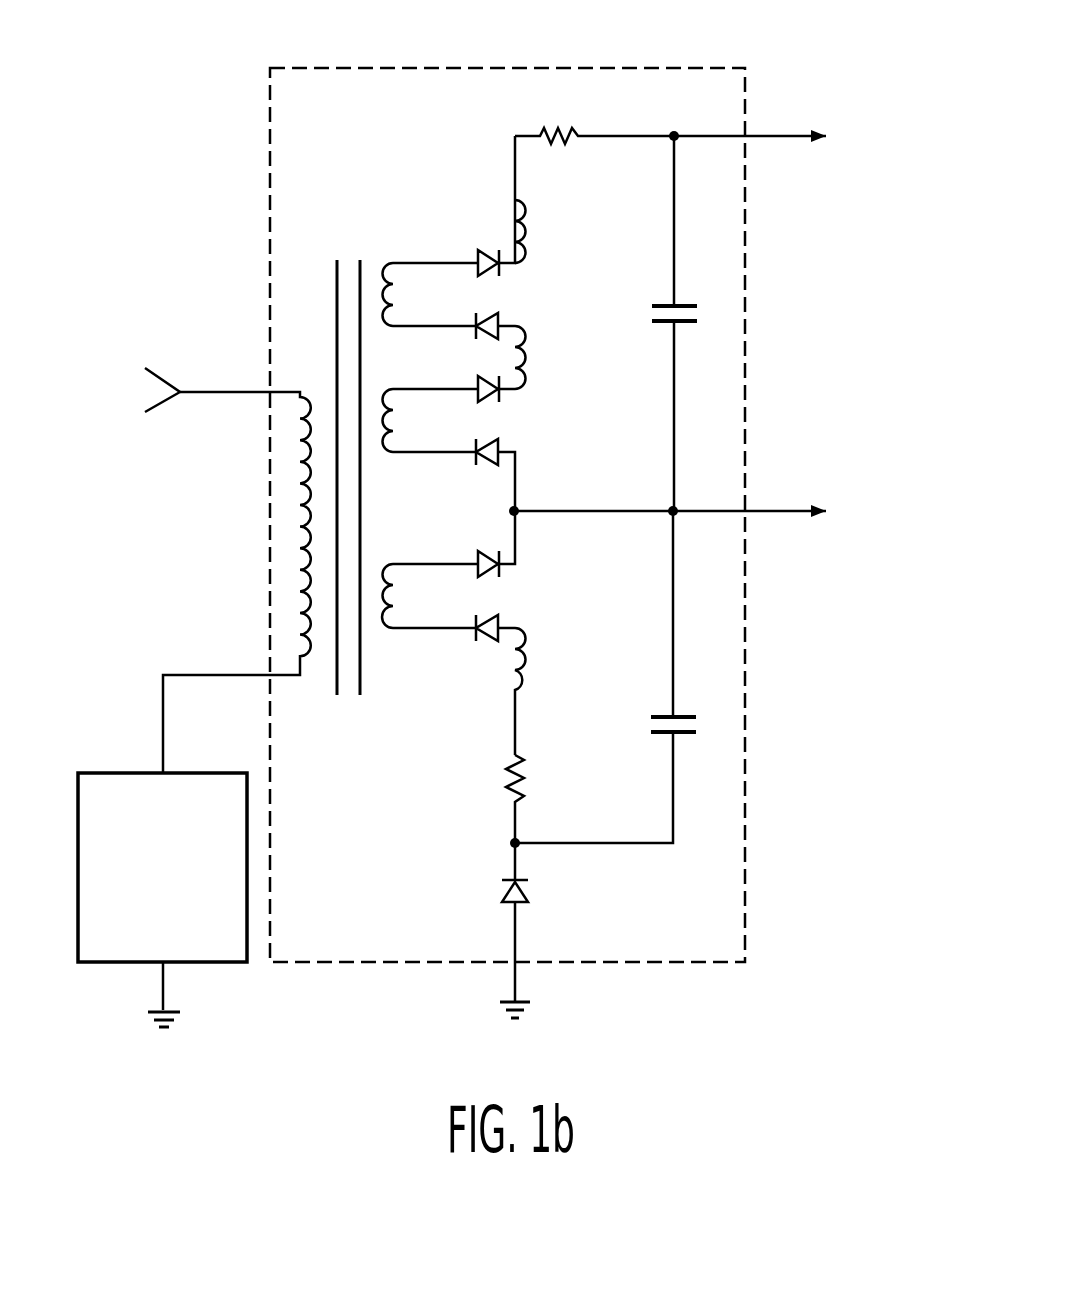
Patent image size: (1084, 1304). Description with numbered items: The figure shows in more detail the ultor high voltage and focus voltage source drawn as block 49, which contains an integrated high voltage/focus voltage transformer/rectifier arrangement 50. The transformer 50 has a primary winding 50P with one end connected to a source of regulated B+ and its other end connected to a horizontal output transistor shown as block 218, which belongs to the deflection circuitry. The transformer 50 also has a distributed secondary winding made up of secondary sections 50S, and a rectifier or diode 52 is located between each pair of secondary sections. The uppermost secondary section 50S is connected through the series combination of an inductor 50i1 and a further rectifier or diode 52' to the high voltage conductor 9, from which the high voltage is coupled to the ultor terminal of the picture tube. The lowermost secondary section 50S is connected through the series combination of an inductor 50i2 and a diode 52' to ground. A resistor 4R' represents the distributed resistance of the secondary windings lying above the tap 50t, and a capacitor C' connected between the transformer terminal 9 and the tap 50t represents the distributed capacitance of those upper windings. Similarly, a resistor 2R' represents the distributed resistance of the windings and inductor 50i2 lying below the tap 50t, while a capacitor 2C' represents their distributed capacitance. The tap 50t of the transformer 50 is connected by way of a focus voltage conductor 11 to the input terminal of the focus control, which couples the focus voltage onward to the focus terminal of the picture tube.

The high voltage and focus voltage source 49 is at (259, 1059).
The integrated high voltage/focus voltage transformer/rectifier arrangement 50 is at (410, 68).
The primary winding 50P is at (300, 483).
The secondary winding section 50S is at (394, 297).
The rectifier or diode 52 is at (505, 459).
The further rectifier or diode 52' is at (537, 545).
The inductor 50i1 is at (538, 199).
The inductor 50i2 is at (539, 691).
The tap 50t is at (518, 508).
The resistor 4R' is at (666, 119).
The resistor 2R' is at (477, 788).
The capacitor C' is at (662, 323).
The capacitor 2C' is at (654, 627).
The high voltage conductor 9 is at (781, 135).
The focus voltage conductor 11 is at (788, 514).
The horizontal output transistor 218 is at (105, 963).